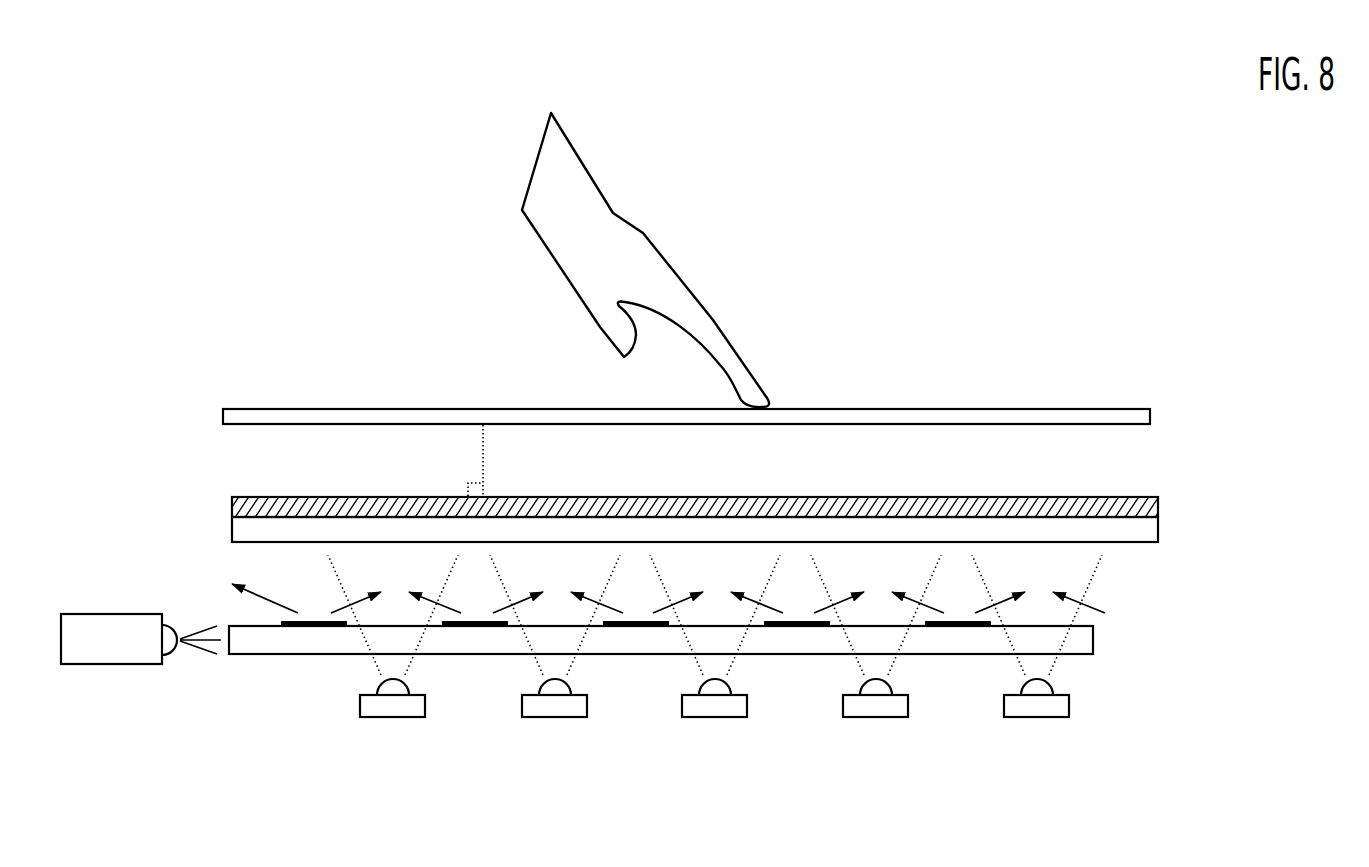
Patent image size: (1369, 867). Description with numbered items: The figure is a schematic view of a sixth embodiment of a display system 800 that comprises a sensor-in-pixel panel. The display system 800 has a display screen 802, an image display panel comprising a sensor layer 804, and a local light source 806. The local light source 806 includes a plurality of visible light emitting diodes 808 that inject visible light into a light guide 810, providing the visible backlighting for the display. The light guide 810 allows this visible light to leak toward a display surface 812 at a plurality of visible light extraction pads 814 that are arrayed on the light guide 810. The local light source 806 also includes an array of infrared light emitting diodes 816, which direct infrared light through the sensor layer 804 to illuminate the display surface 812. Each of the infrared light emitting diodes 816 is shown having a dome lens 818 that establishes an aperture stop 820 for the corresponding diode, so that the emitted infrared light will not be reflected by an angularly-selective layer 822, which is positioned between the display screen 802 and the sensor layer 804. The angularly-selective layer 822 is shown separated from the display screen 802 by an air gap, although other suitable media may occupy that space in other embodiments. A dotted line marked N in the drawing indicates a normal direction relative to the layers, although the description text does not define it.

The display system 800 is at (1016, 182).
The display screen 802 is at (1152, 416).
The sensor layer 804 is at (1160, 532).
The local light source 806 is at (795, 680).
The visible light emitting diodes 808 is at (112, 664).
The light guide 810 is at (283, 654).
The display surface 812 is at (889, 405).
The visible light extraction pads 814 is at (337, 628).
The infrared light emitting diodes 816 is at (1040, 717).
The dome lens 818 is at (1052, 683).
The aperture stop 820 is at (1098, 598).
The angularly-selective layer 822 is at (1160, 508).
The surface normal N is at (492, 439).